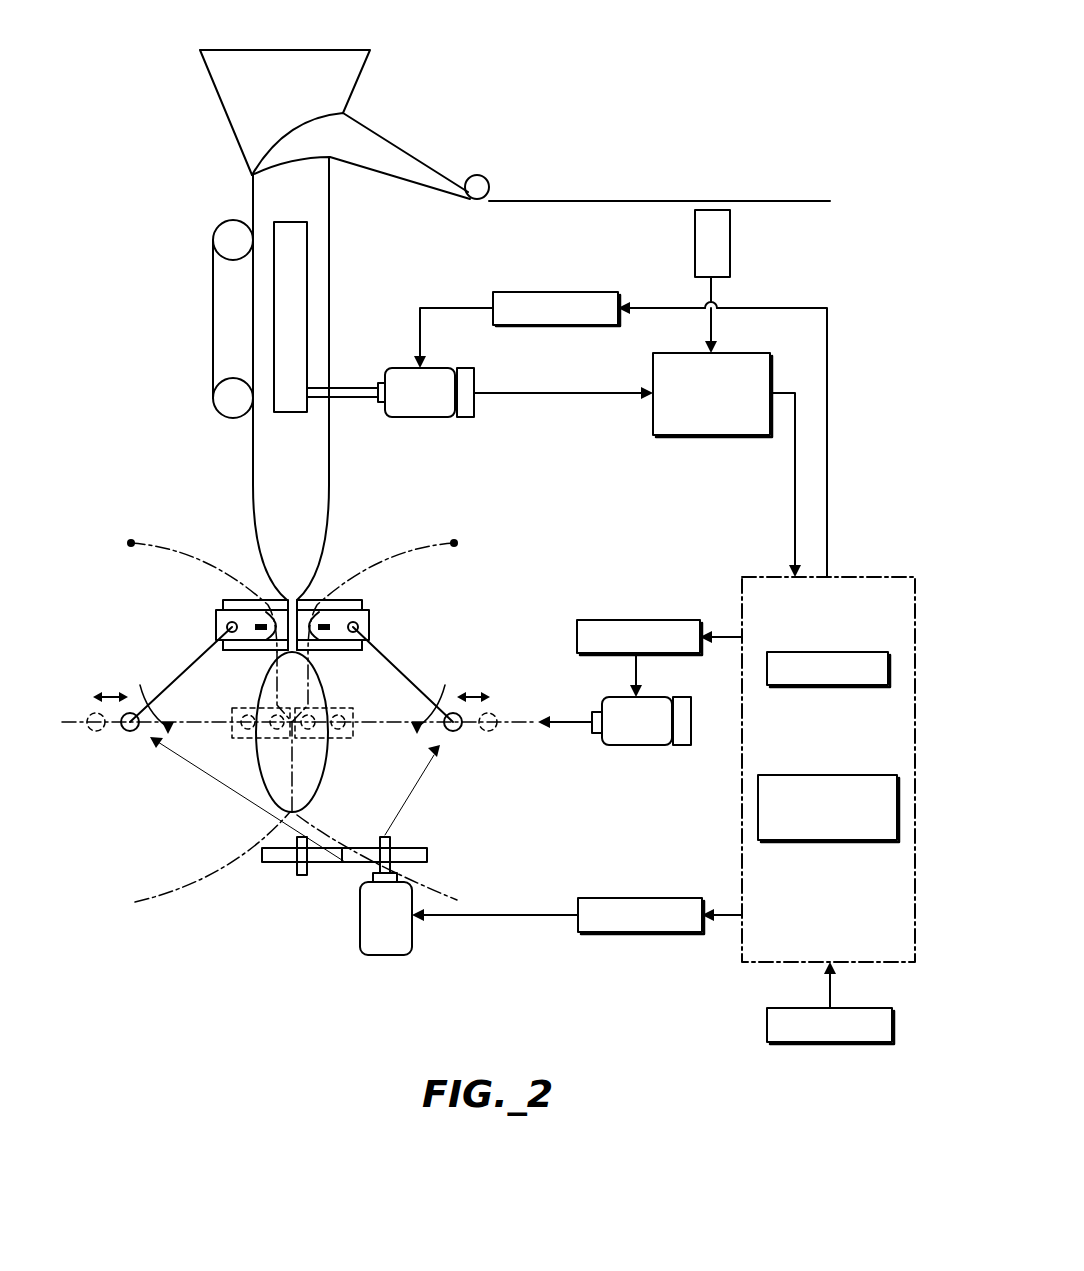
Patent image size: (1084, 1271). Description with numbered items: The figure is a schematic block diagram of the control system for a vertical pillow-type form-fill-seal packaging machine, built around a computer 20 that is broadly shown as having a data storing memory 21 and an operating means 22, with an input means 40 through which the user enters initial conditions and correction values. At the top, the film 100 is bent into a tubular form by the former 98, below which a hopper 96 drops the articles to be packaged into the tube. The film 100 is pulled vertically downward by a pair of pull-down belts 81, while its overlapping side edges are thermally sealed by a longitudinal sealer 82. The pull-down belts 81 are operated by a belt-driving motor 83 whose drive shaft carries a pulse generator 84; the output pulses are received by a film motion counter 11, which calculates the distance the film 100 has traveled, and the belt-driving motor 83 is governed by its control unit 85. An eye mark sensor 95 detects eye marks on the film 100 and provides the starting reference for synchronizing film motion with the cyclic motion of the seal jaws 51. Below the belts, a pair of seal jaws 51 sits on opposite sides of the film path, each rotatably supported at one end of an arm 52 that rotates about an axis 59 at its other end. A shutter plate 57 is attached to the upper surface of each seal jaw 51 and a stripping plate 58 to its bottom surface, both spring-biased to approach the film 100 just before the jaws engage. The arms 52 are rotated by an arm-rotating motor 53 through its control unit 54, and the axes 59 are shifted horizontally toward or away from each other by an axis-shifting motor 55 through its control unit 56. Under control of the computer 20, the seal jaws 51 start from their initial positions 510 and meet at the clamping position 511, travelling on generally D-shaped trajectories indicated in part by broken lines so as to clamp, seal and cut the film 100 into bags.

The film motion counter 11 is at (710, 437).
The computer 20 is at (855, 577).
The memory 21 is at (835, 652).
The operating means 22 is at (835, 775).
The input means 40 is at (833, 1043).
The seal jaws 51 is at (222, 625).
The arm 52 is at (185, 667).
The arm-rotating motor 53 is at (656, 746).
The control unit 54 is at (635, 620).
The axis-shifting motor 55 is at (360, 915).
The control unit 56 is at (636, 898).
The shutter plate 57 is at (232, 600).
The stripping plate 58 is at (250, 652).
The axis 59 is at (130, 733).
The pull-down belts 81 is at (298, 313).
The longitudinal sealer 82 is at (226, 320).
The belt-driving motor 83 is at (405, 418).
The pulse generator 84 is at (465, 368).
The control unit 85 is at (555, 292).
The eye mark sensor 95 is at (733, 246).
The hopper 96 is at (230, 98).
The former 98 is at (372, 147).
The film 100 is at (515, 198).
The initial positions 510 is at (292, 710).
The clamping position 511 is at (296, 725).